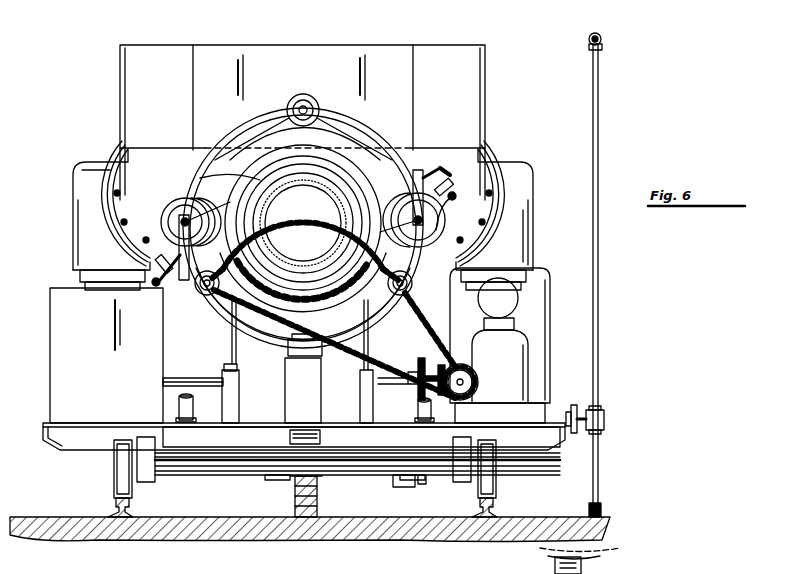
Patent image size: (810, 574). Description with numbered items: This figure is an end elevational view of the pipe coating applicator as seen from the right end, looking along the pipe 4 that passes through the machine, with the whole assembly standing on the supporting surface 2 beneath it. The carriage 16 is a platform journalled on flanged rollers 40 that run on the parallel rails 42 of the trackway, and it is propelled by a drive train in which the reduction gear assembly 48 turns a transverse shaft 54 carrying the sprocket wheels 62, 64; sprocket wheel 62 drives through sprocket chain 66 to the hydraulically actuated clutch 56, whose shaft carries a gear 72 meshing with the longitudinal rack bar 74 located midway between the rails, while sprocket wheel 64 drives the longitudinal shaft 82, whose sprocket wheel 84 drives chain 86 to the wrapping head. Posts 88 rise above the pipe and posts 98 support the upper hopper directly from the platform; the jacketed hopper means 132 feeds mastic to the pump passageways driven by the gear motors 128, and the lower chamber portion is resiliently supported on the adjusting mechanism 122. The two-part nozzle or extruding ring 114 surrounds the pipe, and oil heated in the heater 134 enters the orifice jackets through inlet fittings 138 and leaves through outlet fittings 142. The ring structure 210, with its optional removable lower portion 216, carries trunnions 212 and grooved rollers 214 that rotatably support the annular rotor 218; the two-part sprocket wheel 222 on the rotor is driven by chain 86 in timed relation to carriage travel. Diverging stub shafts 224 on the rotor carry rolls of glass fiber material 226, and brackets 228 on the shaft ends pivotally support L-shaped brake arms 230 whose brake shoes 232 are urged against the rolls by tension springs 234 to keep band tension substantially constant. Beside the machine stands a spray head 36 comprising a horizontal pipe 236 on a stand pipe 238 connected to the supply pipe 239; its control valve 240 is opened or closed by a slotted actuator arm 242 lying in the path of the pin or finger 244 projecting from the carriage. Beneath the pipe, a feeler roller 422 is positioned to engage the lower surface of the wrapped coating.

The floor 2 is at (170, 541).
The pipe 4 is at (600, 545).
The carriage 16 is at (68, 448).
The spray head 36 is at (600, 32).
The flanged roller 40 is at (114, 468).
The rail 42 is at (114, 500).
The reduction gear assembly 48 is at (58, 362).
The shaft 54 is at (190, 378).
The clutch 56 is at (404, 488).
The sprocket wheel 62 is at (418, 368).
The sprocket wheel 64 is at (440, 366).
The sprocket chain 66 is at (412, 388).
The gear 72 is at (317, 486).
The rack bar 74 is at (294, 495).
The shaft 82 is at (474, 376).
The sprocket wheel 84 is at (478, 386).
The sprocket chain 86 is at (242, 150).
The post 88 is at (244, 362).
The post 98 is at (194, 405).
The nozzle or extruding ring 114 is at (270, 260).
The adjusting mechanism 122 is at (303, 378).
The gear motor 128 is at (74, 240).
The hopper means 132 is at (393, 50).
The heater 134 is at (562, 318).
The inlet fitting 138 is at (395, 328).
The outlet fitting 142 is at (252, 222).
The ring structure 210 is at (365, 148).
The trunnion 212 is at (292, 100).
The grooved roller 214 is at (312, 104).
The removable lower portion 216 is at (248, 330).
The annular rotor 218 is at (330, 128).
The sprocket wheel 222 is at (303, 230).
The stub shaft 224 is at (178, 212).
The roll of flexible material 226 is at (188, 196).
The bracket 228 is at (404, 162).
The brake arm 230 is at (158, 255).
The brake shoe 232 is at (158, 254).
The tension spring 234 is at (441, 165).
The horizontally arranged pipe 236 is at (602, 52).
The stand pipe 238 is at (598, 305).
The supply pipe 239 is at (602, 508).
The control valve 240 is at (604, 418).
The slotted actuator arm 242 is at (574, 405).
The pin or finger 244 is at (568, 428).
The feeler roller 422 is at (582, 561).